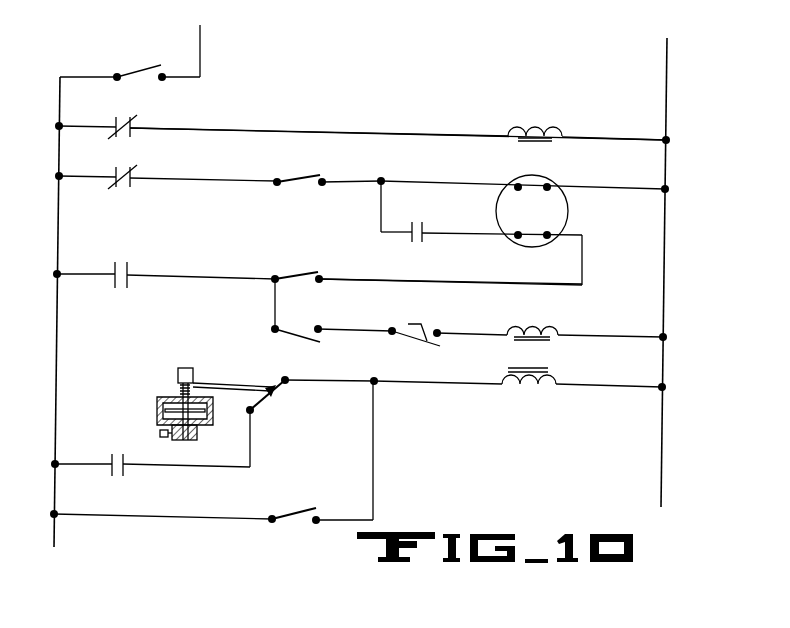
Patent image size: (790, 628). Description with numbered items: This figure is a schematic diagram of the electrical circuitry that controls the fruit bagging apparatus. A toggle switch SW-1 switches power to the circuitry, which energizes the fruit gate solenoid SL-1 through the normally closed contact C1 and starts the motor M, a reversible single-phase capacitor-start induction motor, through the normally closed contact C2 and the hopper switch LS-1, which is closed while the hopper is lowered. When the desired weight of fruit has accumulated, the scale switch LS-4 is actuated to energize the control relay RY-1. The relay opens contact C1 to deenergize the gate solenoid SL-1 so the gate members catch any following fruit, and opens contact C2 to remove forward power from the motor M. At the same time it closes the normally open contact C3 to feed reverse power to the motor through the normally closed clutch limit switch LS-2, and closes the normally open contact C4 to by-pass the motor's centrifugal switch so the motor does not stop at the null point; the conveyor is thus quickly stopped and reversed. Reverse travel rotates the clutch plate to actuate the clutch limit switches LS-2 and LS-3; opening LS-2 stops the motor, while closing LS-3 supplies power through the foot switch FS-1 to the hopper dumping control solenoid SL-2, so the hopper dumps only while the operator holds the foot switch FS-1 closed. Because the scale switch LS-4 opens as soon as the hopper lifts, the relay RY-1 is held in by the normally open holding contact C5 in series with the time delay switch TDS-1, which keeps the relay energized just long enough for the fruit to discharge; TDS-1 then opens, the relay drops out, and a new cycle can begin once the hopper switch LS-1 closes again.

The toggle switch SW-1 is at (137, 52).
The normally closed contact C1 is at (130, 130).
The normally closed contact C2 is at (130, 180).
The normally open contact C3 is at (129, 270).
The normally open contact C4 is at (423, 235).
The normally open holding contact C5 is at (125, 468).
The hopper switch LS-1 is at (300, 176).
The clutch limit switch LS-2 is at (304, 257).
The clutch limit switch LS-3 is at (286, 334).
The scale switch LS-4 is at (297, 492).
The foot switch FS-1 is at (446, 308).
The fruit gate solenoid SL-1 is at (547, 108).
The control solenoid SL-2 is at (512, 330).
The control relay RY-1 is at (505, 378).
The time delay switch TDS-1 is at (273, 398).
The motor M is at (546, 222).